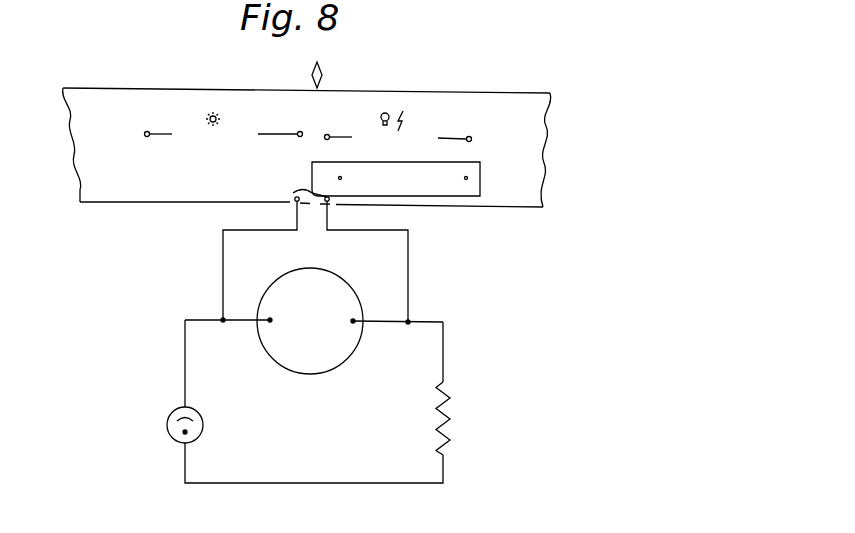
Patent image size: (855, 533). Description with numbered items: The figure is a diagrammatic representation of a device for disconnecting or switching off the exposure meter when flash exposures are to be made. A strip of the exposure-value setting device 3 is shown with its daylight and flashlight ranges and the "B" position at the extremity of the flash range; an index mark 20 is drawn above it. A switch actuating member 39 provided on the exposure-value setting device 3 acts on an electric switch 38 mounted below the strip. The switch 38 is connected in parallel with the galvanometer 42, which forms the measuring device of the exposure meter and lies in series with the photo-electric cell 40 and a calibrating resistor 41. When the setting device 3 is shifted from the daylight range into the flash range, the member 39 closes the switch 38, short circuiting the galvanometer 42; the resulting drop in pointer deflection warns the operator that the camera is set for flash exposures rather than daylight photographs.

The exposure-value setting device 3 is at (476, 110).
The indicator marker 20 is at (322, 70).
The electric switch 38 is at (285, 190).
The switch actuating member 39 is at (433, 190).
The photo-electric cell 40 is at (168, 432).
The calibrating resistor 41 is at (452, 413).
The galvanometer 42 is at (352, 305).